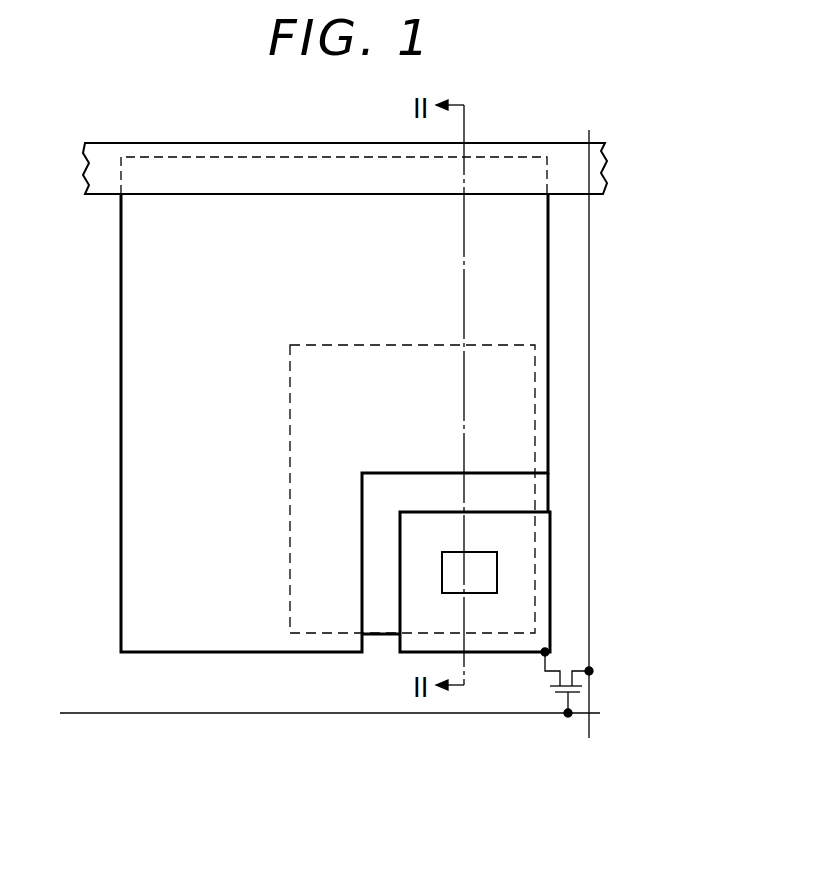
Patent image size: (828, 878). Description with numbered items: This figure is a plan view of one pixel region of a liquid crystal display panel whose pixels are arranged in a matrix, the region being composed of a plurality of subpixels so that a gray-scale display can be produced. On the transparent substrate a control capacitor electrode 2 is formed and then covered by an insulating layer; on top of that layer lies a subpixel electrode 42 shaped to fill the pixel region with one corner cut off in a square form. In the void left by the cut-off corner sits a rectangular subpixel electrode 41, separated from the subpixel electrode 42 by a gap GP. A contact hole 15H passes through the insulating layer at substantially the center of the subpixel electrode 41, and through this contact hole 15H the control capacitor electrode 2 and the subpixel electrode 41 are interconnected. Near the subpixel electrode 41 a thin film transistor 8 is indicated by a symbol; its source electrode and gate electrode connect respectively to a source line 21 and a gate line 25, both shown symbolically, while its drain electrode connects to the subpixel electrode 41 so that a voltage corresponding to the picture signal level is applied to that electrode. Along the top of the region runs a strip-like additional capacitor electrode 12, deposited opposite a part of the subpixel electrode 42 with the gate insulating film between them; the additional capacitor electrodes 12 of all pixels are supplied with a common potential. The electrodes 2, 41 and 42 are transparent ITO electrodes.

The additional capacitor electrode 12 is at (104, 155).
The subpixel electrode 42 is at (134, 302).
The control capacitor electrode 2 is at (297, 343).
The subpixel electrode 41 is at (404, 538).
The contact hole 15H is at (478, 558).
The gap GP is at (545, 488).
The source line 21 is at (590, 628).
The gate line 25 is at (386, 715).
The thin film transistor 8 is at (544, 689).